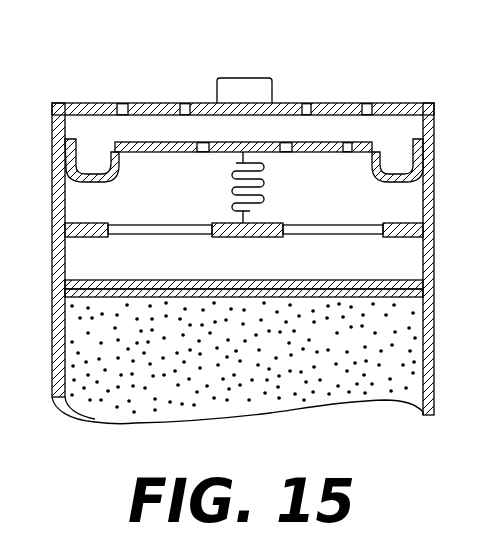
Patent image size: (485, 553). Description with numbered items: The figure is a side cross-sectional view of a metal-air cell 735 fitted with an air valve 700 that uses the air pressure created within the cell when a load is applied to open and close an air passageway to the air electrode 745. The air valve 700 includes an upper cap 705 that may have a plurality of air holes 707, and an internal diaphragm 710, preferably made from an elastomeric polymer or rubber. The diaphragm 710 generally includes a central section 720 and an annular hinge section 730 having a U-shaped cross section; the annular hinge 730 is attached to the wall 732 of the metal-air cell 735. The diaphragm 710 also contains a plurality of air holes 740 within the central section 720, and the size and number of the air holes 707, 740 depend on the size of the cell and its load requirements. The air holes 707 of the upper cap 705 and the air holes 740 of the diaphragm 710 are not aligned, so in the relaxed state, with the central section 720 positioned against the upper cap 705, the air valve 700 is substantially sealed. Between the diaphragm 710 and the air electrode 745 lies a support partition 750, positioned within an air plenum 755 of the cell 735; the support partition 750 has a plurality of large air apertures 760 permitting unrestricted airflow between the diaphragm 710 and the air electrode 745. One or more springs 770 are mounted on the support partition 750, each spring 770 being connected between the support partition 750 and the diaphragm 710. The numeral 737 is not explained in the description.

The air valve 700 is at (111, 56).
The upper cap 705 is at (53, 115).
The air holes 707 is at (186, 104).
The diaphragm 710 is at (277, 133).
The cover plate 737 is at (441, 110).
The metal-air cell 735 is at (443, 348).
The central section 720 is at (227, 155).
The air holes 740 is at (203, 153).
The annular hinge section 730 is at (85, 183).
The spring 770 is at (263, 191).
The air apertures 760 is at (272, 258).
The support partition 750 is at (383, 237).
The air electrode 745 is at (313, 283).
The air plenum 755 is at (178, 274).
The wall 732 is at (66, 257).